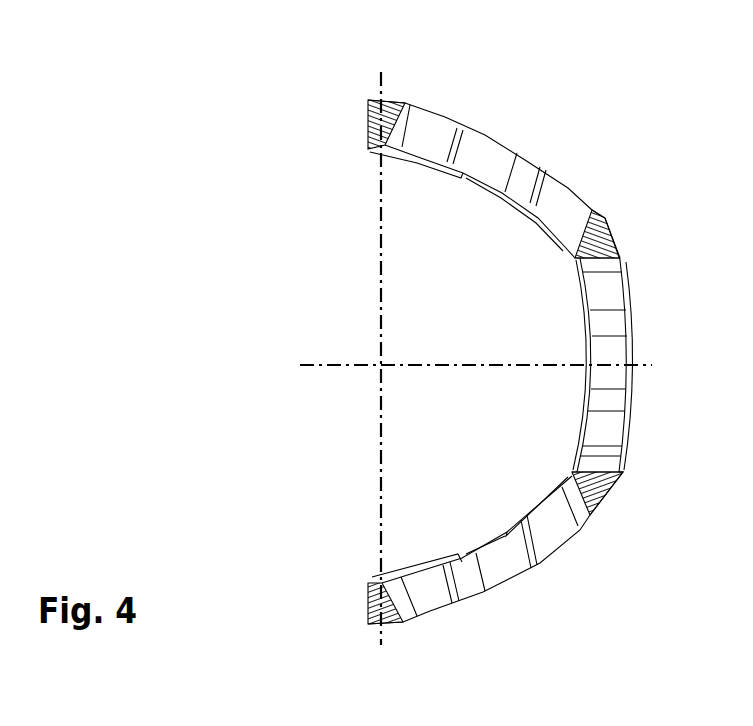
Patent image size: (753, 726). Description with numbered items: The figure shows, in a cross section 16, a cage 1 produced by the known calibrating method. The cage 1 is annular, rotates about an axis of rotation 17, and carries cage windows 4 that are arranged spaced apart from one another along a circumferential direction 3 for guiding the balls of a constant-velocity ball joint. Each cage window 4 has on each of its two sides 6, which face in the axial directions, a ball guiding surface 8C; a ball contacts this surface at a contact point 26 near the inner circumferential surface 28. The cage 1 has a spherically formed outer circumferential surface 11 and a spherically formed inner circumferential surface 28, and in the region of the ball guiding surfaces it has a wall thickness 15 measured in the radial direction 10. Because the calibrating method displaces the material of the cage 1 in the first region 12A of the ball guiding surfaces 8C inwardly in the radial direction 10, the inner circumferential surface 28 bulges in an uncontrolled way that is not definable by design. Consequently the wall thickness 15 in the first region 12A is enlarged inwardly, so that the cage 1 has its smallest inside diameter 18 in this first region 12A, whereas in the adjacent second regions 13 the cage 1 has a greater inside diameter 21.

The cage 1 is at (567, 162).
The circumferential direction 3 is at (648, 276).
The cage window 4 is at (474, 523).
The side 6 is at (525, 547).
The ball guiding surface 8C is at (492, 565).
The radial direction 10 is at (381, 365).
The outer circumferential surface 11 is at (445, 608).
The first region 12A is at (612, 342).
The second region 13 is at (612, 337).
The wall thickness 15 is at (487, 178).
The cross section 16 is at (500, 130).
The axis of rotation 17 is at (383, 368).
The smallest inside diameter 18 is at (347, 420).
The greater inside diameter 21 is at (320, 422).
The contact point 26 is at (604, 367).
The inner circumferential surface 28 is at (565, 477).